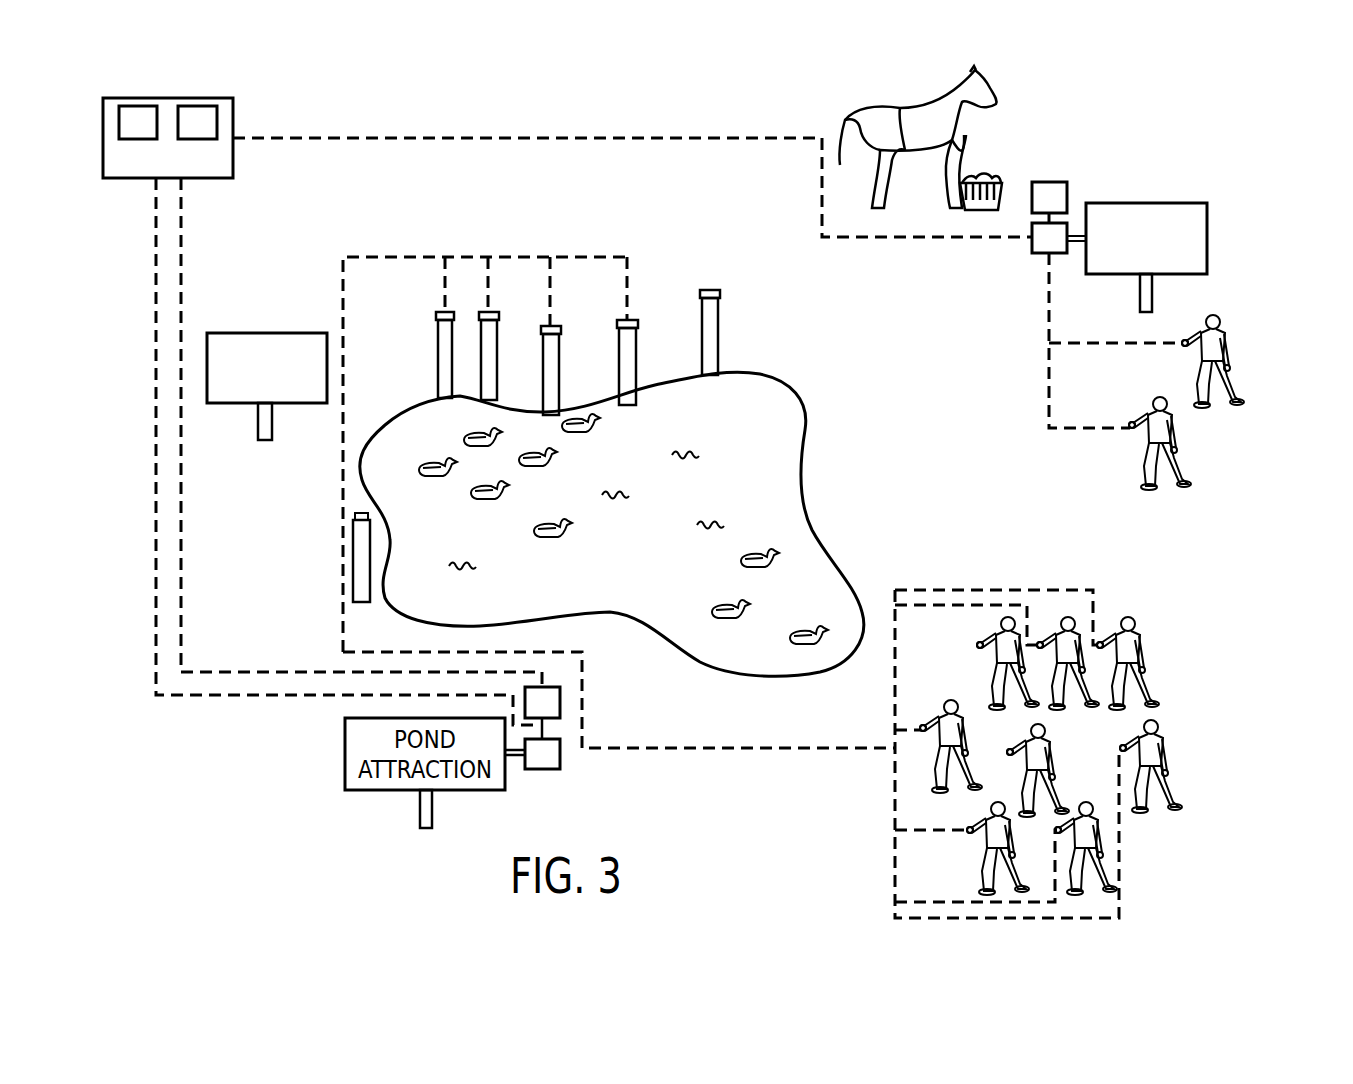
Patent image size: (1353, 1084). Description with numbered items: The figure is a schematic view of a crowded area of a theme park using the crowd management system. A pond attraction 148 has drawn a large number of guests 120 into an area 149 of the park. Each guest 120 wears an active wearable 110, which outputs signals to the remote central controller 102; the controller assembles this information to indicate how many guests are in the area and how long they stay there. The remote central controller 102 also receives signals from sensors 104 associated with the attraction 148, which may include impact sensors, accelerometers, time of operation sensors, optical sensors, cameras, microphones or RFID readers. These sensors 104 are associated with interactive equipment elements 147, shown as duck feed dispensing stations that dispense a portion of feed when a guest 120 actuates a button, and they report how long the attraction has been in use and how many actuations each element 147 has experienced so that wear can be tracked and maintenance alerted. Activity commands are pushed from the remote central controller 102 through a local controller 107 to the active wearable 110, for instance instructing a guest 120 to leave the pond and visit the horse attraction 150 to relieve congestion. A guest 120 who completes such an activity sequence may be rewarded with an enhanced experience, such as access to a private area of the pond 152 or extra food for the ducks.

The remote central controller 102 is at (166, 98).
The sensors 104 is at (436, 318).
The local controller 107 is at (1036, 253).
The active wearable 110 is at (1183, 345).
The guest 120 is at (1195, 470).
The interactive equipment element 147 is at (719, 338).
The pond attraction 148 is at (662, 300).
The area 149 is at (1068, 630).
The horse attraction 150 is at (858, 82).
The private area of the pond 152 is at (265, 310).